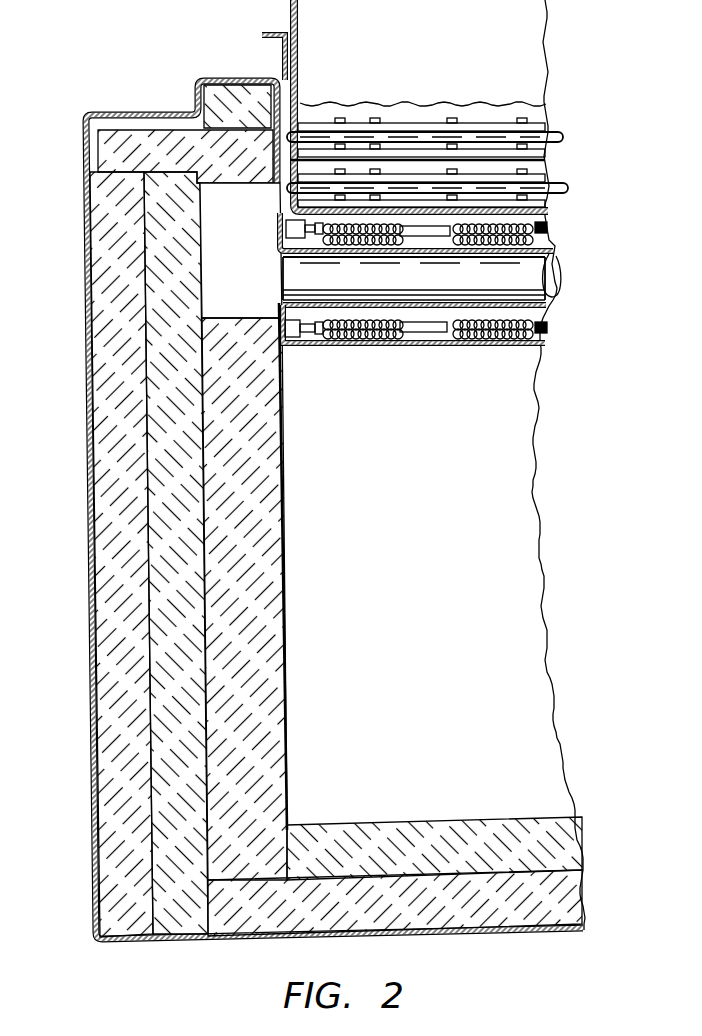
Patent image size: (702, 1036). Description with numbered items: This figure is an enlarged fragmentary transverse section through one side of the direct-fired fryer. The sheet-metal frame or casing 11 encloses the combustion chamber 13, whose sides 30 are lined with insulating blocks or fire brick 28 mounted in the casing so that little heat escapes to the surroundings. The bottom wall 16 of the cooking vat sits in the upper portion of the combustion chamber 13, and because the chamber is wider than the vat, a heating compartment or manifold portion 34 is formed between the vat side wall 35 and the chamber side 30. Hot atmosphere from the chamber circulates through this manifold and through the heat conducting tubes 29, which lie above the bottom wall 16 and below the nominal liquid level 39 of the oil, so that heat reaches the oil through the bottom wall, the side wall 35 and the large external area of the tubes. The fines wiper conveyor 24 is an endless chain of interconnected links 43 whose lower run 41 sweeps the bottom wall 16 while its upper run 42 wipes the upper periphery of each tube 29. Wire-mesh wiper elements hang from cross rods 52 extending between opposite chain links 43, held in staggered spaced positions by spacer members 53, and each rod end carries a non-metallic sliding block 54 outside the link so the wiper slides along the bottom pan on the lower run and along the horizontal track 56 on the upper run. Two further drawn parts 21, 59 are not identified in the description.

The frame 11 is at (93, 880).
The combustion chamber 13 is at (427, 558).
The bottom wall of the cooking vat 16 is at (428, 344).
The rods 21 is at (362, 166).
The fines wiper conveyor 24 is at (551, 229).
The insulating fire brick 28 is at (283, 478).
The heat conducting tubes 29 is at (485, 280).
The sides of the combustion chamber 30 is at (200, 255).
The manifold portion 34 is at (253, 308).
The side wall of the vat 35 is at (275, 202).
The nominal liquid level 39 is at (475, 100).
The lower run 41 is at (507, 308).
The upper run 42 is at (550, 226).
The chain links 43 is at (315, 323).
The cross rods 52 is at (547, 237).
The spacer members 53 is at (438, 296).
The sliding block 54 is at (297, 338).
The horizontal track 56 is at (296, 256).
The block 59 is at (290, 230).